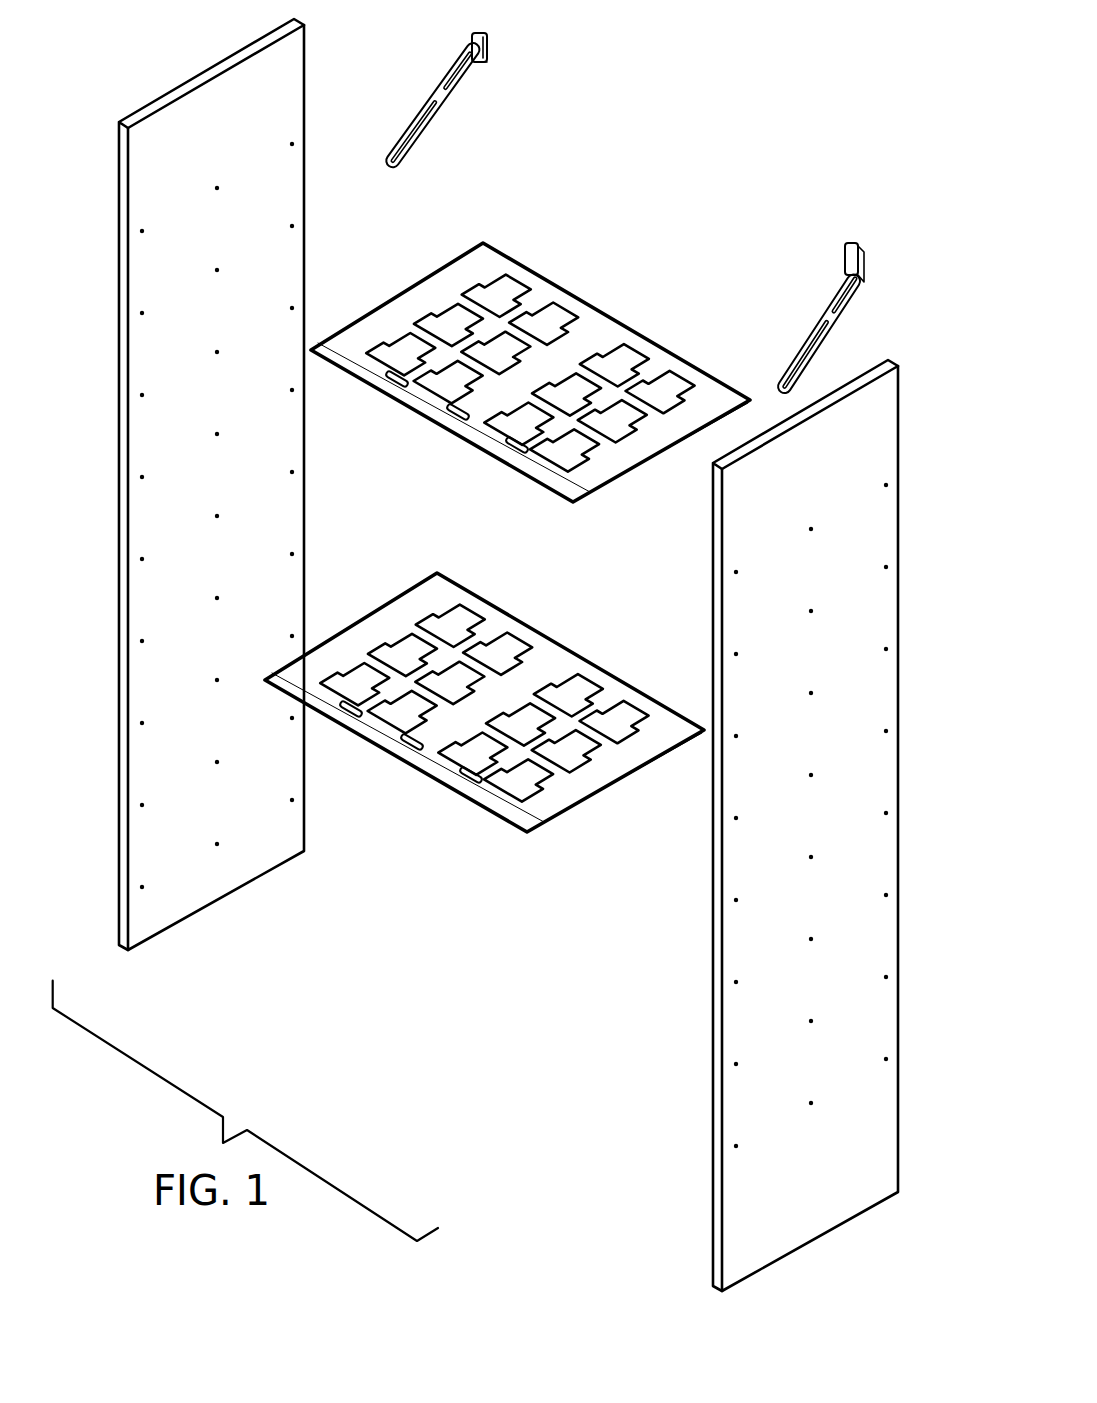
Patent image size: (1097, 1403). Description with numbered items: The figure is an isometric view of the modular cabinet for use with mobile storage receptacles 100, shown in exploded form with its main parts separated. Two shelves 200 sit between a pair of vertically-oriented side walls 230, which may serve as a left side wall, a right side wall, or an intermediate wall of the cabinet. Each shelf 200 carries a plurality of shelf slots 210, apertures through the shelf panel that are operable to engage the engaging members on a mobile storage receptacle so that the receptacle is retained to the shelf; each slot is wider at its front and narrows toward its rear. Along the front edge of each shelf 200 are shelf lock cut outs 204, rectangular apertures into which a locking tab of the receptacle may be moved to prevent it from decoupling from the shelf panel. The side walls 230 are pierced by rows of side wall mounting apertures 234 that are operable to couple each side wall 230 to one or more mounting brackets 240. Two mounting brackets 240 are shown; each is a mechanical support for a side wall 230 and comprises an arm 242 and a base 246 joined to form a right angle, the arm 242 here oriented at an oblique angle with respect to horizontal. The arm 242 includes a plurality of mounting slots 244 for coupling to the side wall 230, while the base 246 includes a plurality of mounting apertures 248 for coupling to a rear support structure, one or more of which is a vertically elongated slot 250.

The modular cabinet for use with mobile storage receptacles 100 is at (738, 156).
The shelf 200 is at (610, 323).
The shelf lock cut outs 204 is at (513, 447).
The shelf slots 210 is at (590, 677).
The side wall 230 is at (170, 99).
The mounting hole 234 is at (217, 680).
The mounting bracket 240 is at (433, 90).
The arm 242 is at (393, 140).
The mounting slots 244 is at (428, 113).
The base 246 is at (480, 32).
The mounting apertures 248 is at (475, 53).
The vertically elongated slot 250 is at (490, 47).